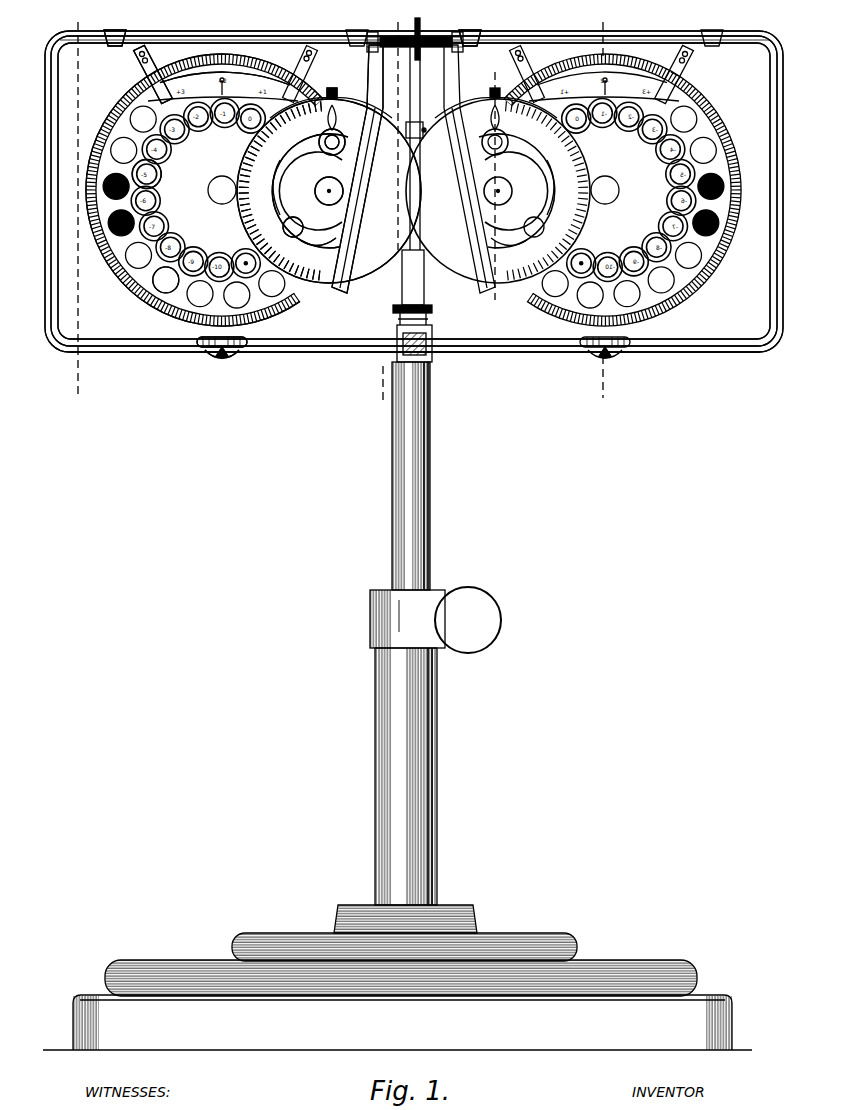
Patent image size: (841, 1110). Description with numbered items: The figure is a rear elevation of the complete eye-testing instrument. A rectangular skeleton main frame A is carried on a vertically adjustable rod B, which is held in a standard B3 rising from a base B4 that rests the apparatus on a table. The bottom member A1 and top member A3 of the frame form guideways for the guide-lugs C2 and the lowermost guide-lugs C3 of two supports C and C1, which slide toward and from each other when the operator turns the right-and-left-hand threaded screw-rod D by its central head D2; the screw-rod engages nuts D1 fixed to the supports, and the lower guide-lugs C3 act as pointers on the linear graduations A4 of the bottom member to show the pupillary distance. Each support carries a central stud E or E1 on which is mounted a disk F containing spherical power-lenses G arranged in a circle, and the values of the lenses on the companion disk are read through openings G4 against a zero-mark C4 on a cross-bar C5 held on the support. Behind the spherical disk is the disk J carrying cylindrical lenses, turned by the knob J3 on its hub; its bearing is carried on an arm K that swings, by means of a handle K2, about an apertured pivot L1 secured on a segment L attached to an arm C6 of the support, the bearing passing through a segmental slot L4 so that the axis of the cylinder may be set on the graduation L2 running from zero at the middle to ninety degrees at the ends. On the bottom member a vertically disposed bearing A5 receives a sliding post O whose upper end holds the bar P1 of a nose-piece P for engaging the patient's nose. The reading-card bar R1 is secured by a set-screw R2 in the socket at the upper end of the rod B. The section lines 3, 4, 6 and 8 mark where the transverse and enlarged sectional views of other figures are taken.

The section line 3 3 is at (76, 210).
The section line 4 4 is at (389, 211).
The section line 6 6 is at (499, 186).
The section line 8 8 is at (602, 211).
The main frame A is at (47, 298).
The bottom member A1 is at (310, 353).
The top member A3 is at (286, 33).
The linear graduations A4 is at (200, 350).
The vertically-disposed bearing A5 is at (405, 292).
The rod B is at (430, 498).
The standard B3 is at (436, 752).
The base B4 is at (242, 940).
The support C is at (100, 68).
The support C1 is at (766, 72).
The guide-lugs C2 is at (118, 30).
The lowermost guide-lugs C3 is at (222, 358).
The zero-mark C4 is at (222, 80).
The cross-bar C5 is at (185, 58).
The arm C6 is at (350, 275).
The screw-rod D is at (436, 36).
The nuts D1 is at (372, 31).
The head D2 is at (421, 30).
The stud E is at (218, 190).
The stud E1 is at (606, 190).
The disk F is at (110, 270).
The spherical power-lenses G is at (165, 280).
The openings G4 is at (160, 172).
The disk J is at (455, 195).
The knob J3 is at (319, 142).
The arm K is at (337, 138).
The handle K2 is at (336, 92).
The segment L is at (247, 232).
The apertured pivot L1 is at (306, 215).
The graduation L2 is at (246, 160).
The segmental slot L4 is at (310, 242).
The post O is at (410, 212).
The nose-piece P is at (407, 118).
The bar P1 is at (424, 122).
The bar R1 is at (424, 350).
The set-screw R2 is at (432, 309).